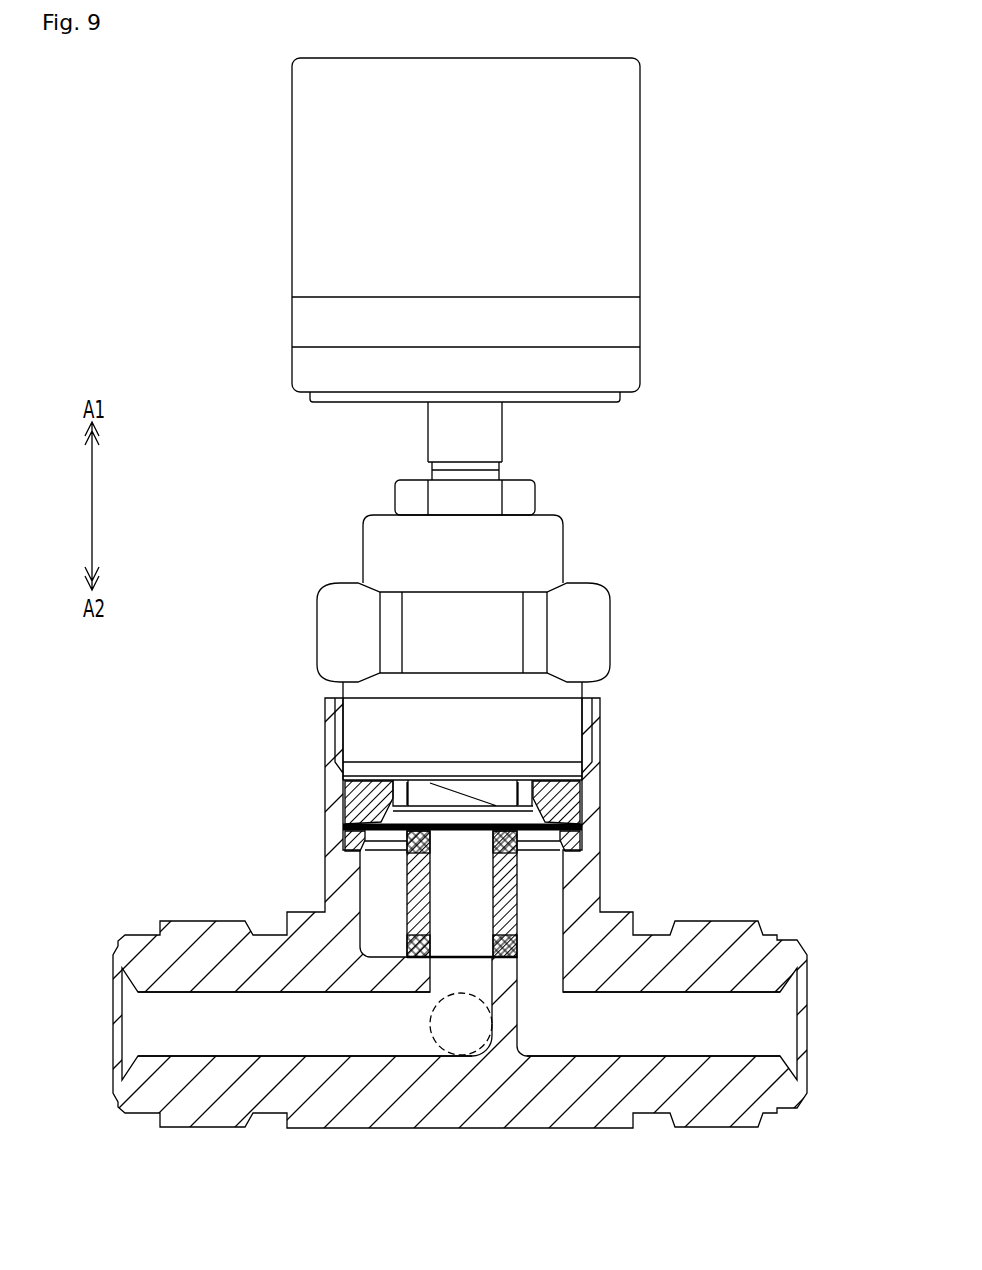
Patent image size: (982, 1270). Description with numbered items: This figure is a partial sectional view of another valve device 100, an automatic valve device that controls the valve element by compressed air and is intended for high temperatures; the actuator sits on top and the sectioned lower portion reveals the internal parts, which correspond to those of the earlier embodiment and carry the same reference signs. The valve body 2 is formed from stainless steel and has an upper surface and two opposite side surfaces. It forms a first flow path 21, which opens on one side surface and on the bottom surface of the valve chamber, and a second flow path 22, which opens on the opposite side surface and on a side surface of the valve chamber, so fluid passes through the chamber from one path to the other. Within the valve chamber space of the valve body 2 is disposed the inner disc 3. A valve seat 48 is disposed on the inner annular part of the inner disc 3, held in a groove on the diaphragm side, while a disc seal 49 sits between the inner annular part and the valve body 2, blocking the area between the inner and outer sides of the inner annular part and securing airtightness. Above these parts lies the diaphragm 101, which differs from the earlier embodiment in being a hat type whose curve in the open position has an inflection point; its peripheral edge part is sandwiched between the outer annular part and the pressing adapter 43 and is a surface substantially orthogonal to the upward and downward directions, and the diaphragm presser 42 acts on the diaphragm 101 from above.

The valve device 100 is at (743, 90).
The valve body 2 is at (491, 944).
The first flow path 21 is at (352, 1022).
The second flow path 22 is at (597, 1040).
The inner disc 3 is at (407, 898).
The diaphragm presser 42 is at (393, 783).
The pressing adapter 43 is at (578, 808).
The valve seat 48 is at (350, 846).
The disc seal 49 is at (517, 945).
The diaphragm 101 is at (345, 836).